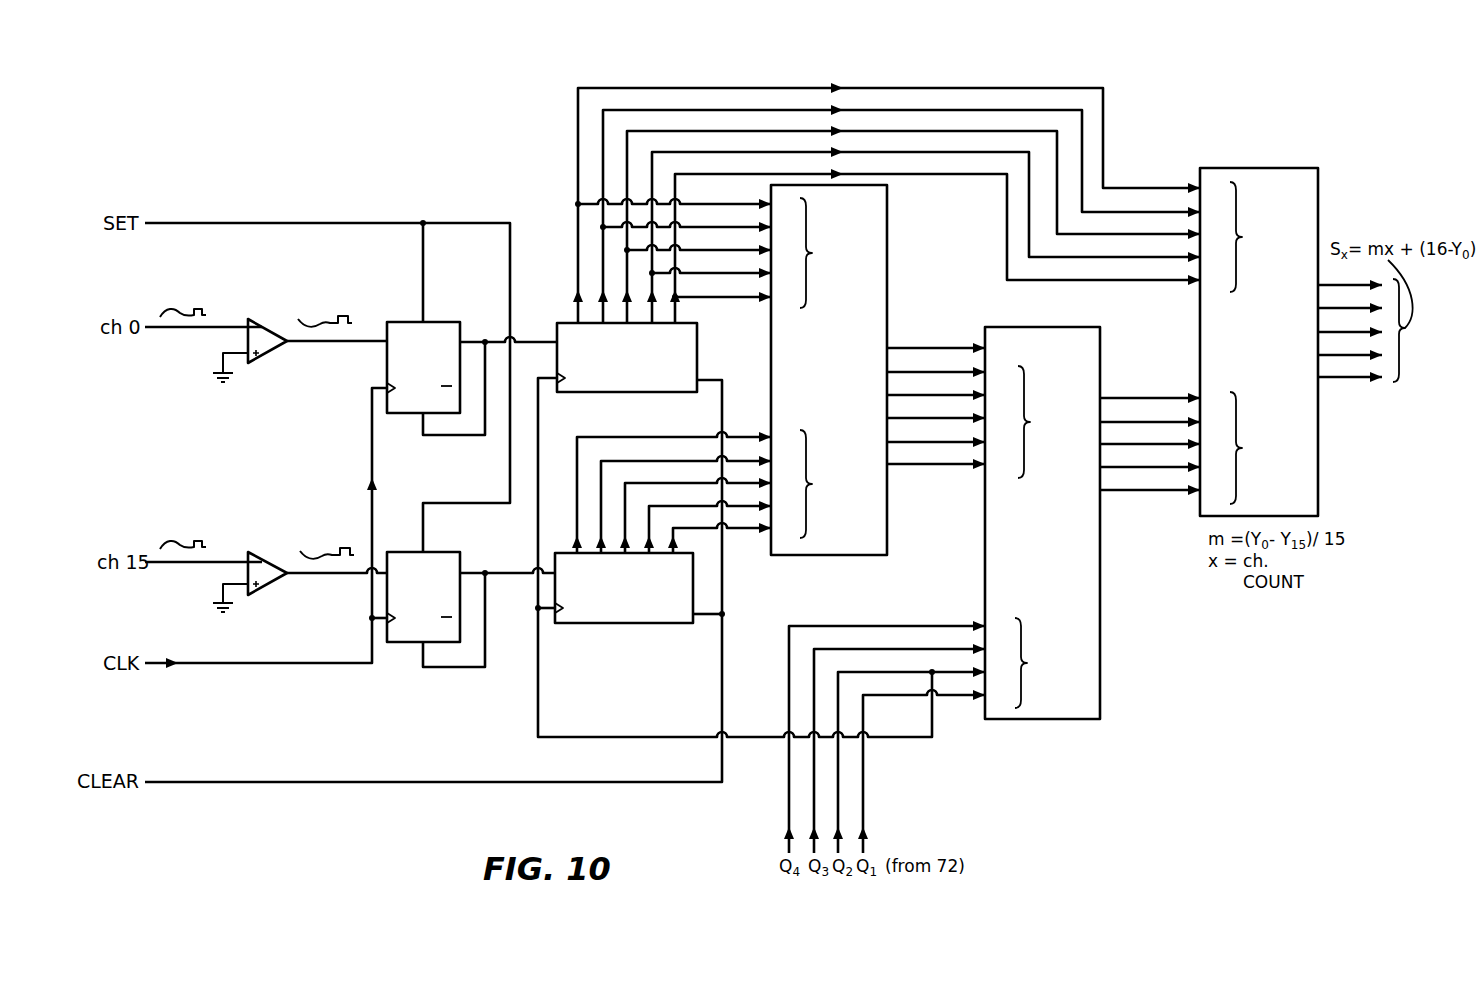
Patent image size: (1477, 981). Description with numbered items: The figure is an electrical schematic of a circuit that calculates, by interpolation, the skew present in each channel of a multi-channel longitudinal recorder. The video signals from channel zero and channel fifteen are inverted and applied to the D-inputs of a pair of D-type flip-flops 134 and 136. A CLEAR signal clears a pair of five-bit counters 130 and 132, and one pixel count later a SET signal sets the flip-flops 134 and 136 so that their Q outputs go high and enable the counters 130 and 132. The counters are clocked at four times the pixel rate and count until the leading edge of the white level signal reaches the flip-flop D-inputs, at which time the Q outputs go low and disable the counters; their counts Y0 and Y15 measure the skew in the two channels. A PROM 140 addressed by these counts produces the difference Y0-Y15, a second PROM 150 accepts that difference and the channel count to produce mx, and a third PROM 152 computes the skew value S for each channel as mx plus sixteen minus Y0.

The 5-bit counter 130 is at (697, 357).
The 5-bit counter 132 is at (672, 624).
The D-type flip-flop 134 is at (437, 322).
The D-type flip-flop 136 is at (447, 552).
The PROM 140 is at (908, 310).
The second PROM 150 is at (1124, 589).
The third PROM 152 is at (1257, 169).